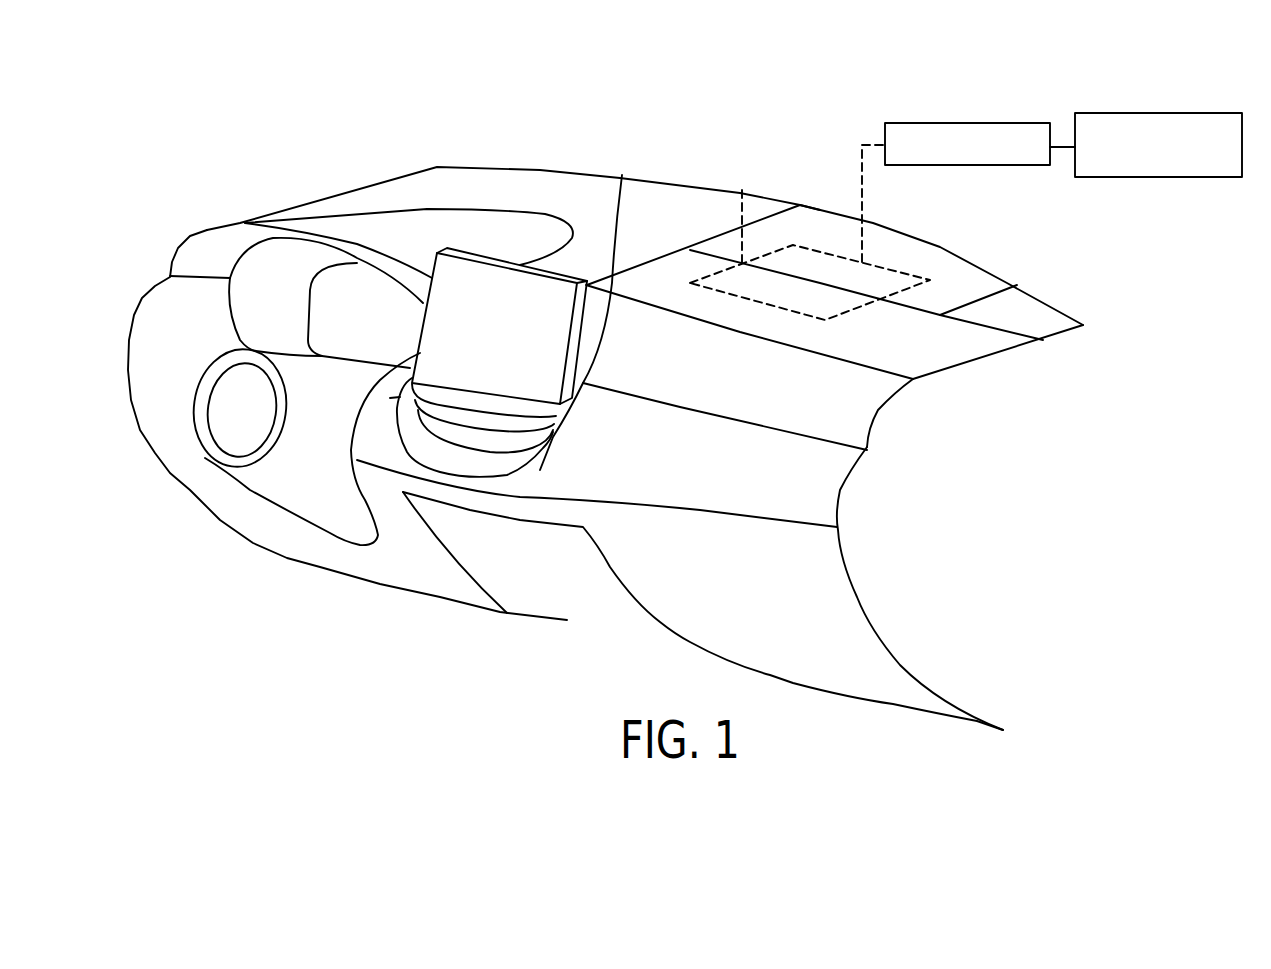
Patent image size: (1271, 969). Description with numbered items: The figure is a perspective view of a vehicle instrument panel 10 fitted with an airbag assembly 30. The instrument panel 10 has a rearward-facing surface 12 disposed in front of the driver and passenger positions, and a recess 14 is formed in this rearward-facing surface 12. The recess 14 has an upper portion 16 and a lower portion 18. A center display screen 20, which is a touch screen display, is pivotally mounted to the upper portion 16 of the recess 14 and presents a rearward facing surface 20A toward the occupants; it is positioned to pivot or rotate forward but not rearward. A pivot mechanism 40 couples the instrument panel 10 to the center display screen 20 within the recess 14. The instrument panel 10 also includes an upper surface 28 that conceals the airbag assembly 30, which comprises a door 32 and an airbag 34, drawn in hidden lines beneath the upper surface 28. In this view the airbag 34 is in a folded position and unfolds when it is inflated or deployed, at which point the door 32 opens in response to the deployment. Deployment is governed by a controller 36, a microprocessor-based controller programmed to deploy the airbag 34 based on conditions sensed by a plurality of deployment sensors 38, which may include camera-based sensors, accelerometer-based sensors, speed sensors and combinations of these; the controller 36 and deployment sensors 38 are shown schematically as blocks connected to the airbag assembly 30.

The instrument panel 10 is at (933, 329).
The rearward-facing surface 12 is at (827, 487).
The recess 14 is at (463, 474).
The upper portion 16 is at (622, 175).
The lower portion 18 is at (451, 452).
The center display screen 20 is at (450, 320).
The rearward facing surface 20A is at (474, 356).
The upper surface 28 is at (960, 280).
The airbag assembly 30 is at (833, 123).
The door 32 is at (863, 292).
The airbag 34 is at (742, 187).
The controller 36 is at (968, 165).
The deployment sensors 38 is at (1158, 177).
The pivot mechanism 40 is at (390, 398).